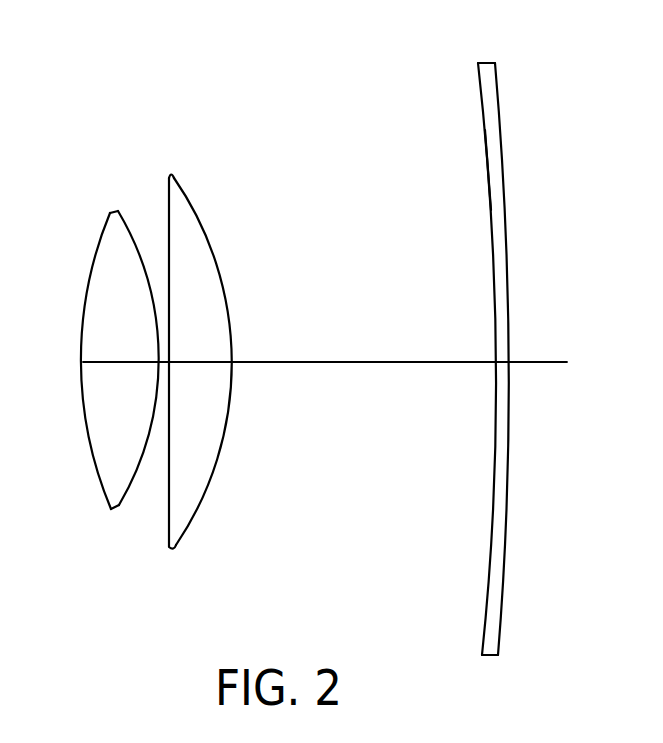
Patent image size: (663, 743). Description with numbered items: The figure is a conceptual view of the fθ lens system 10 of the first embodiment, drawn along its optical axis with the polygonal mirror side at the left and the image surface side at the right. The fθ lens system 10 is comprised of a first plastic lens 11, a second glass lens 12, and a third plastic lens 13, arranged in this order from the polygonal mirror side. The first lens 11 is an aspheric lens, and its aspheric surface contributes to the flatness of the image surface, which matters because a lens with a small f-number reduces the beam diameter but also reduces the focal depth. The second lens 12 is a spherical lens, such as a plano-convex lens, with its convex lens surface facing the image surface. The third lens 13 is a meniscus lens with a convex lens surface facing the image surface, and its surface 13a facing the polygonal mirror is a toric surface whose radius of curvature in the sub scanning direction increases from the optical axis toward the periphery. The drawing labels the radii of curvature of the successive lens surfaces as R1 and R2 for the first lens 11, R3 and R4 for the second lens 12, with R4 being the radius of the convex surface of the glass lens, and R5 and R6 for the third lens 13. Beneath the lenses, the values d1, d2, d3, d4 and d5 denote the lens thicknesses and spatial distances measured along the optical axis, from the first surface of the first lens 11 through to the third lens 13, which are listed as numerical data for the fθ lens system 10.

The fθ lens system 10 is at (279, 391).
The first plastic lens 11 is at (110, 337).
The second glass lens 12 is at (213, 342).
The third plastic lens 13 is at (493, 349).
The toric surface 13a is at (489, 168).
The radius of curvature of the first surface of the first lens R1 is at (114, 232).
The radius of curvature of the second surface of the first lens R2 is at (140, 302).
The radius of curvature of the first surface of the second lens R3 is at (169, 192).
The radius of curvature of the convex lens surface of the glass lens R4 is at (203, 230).
The radius of curvature of the first surface of the third lens R5 is at (481, 92).
The radius of curvature of the convex surface of the third lens R6 is at (500, 108).
The lens thickness of the first lens d1 is at (142, 362).
The spatial distance between the first and second lenses d2 is at (165, 362).
The lens thickness of the second lens d3 is at (197, 362).
The spatial distance between the second and third lenses d4 is at (280, 362).
The lens thickness of the third lens d5 is at (448, 472).